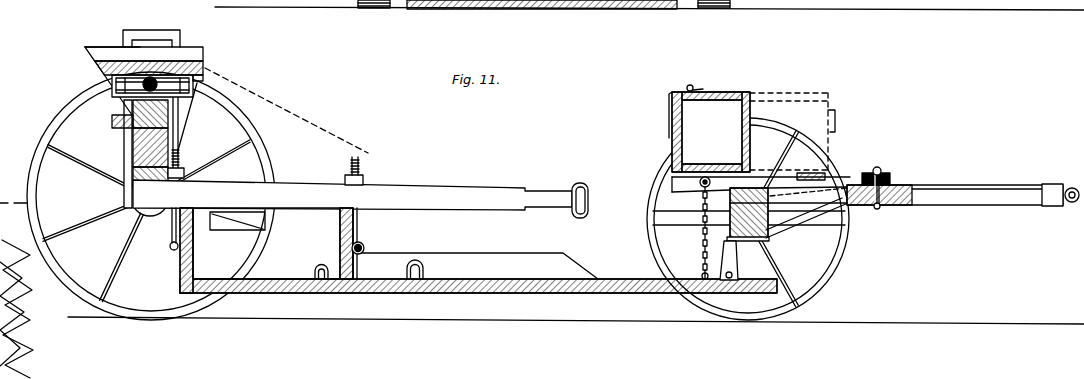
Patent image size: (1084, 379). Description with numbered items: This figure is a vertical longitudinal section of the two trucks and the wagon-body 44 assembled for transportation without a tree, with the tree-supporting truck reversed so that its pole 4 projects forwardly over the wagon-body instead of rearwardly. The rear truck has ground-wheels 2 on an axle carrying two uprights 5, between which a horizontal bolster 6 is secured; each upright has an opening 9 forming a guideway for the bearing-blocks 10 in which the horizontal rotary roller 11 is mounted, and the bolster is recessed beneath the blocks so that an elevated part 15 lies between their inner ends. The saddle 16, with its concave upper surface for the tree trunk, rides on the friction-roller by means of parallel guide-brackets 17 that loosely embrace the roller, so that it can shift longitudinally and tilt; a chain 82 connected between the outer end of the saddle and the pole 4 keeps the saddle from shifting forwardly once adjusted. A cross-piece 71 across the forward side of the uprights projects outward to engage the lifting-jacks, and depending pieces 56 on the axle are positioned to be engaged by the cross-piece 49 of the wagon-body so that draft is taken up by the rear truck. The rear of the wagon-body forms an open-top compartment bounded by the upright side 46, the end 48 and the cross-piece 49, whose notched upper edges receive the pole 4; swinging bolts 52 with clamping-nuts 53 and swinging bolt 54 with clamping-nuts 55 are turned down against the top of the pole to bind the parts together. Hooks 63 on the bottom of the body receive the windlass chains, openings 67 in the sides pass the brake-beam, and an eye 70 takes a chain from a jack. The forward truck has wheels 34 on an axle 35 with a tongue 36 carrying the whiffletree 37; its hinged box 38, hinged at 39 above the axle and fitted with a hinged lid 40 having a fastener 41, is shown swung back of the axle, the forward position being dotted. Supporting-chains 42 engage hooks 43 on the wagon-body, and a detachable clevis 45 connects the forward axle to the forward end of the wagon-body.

The ground-wheels 2 is at (840, 168).
The tongue or pole 4 is at (464, 191).
The uprights 5 is at (186, 40).
The bolster 6 is at (123, 135).
The opening 9 is at (151, 42).
The bearing-blocks 10 is at (193, 85).
The roller 11 is at (112, 83).
The elevated part 15 is at (112, 108).
The saddle 16 is at (104, 46).
The guide-brackets 17 is at (194, 93).
The wheels 34 is at (843, 271).
The axle 35 is at (770, 231).
The tongue 36 is at (965, 189).
The whiffletree 37 is at (890, 181).
The hinged box 38 is at (735, 91).
The hinge 39 is at (752, 170).
The hinged lid 40 is at (671, 105).
The fastener 41 is at (700, 88).
The supporting-chains 42 is at (700, 241).
The hooks 43 is at (701, 273).
The wagon-body 44 is at (478, 273).
The clevis 45 is at (737, 260).
The upright side 46 is at (266, 243).
The end 48 is at (195, 249).
The cross-piece 49 is at (359, 265).
The swinging bolts 52 is at (179, 156).
The clamping-nut 53 is at (198, 171).
The swinging bolt 54 is at (351, 164).
The clamping-nuts 55 is at (366, 179).
The depending pieces 56 is at (167, 224).
The hooks 63 is at (316, 272).
The openings 67 is at (268, 221).
The eye 70 is at (423, 262).
The cross-piece 71 is at (113, 124).
The chain 82 is at (302, 116).